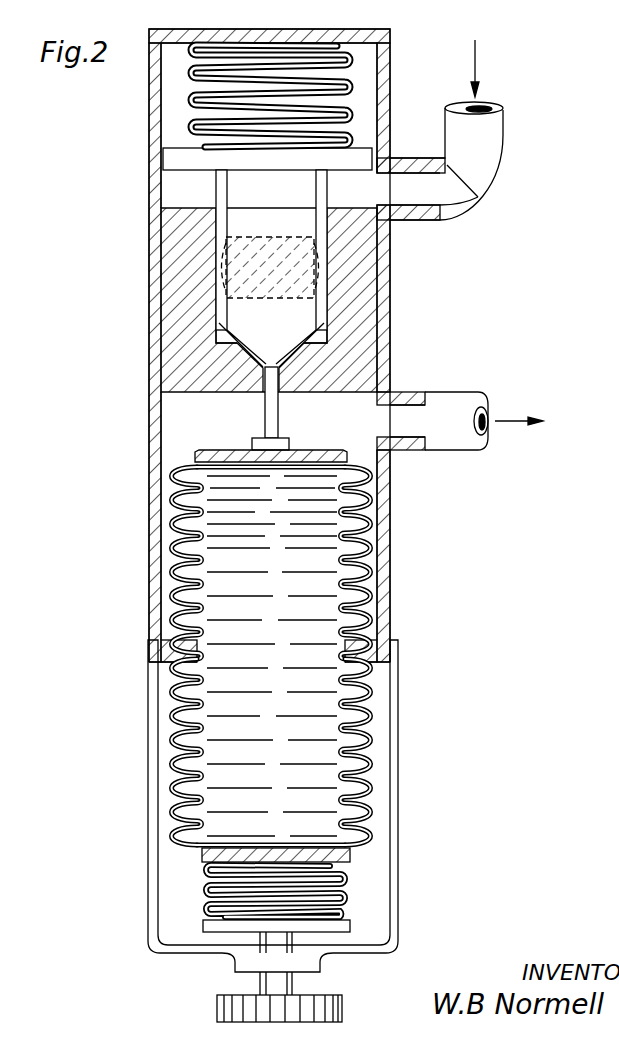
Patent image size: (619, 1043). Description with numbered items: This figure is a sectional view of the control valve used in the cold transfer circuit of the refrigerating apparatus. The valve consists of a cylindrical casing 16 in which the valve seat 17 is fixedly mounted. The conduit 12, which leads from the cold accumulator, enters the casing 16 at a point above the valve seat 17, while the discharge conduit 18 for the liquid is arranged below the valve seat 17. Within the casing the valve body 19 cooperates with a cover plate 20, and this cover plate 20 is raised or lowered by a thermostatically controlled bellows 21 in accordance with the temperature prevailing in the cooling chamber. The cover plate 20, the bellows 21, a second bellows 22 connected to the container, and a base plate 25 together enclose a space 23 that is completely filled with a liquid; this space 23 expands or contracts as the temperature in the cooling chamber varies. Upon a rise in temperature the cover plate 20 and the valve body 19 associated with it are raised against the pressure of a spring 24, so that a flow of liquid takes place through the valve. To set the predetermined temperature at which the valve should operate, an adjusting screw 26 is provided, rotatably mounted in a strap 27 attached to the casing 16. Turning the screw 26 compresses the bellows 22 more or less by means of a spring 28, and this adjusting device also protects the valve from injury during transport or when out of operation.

The conduit 12 is at (483, 173).
The cylindrical casing 16 is at (158, 311).
The valve seat 17 is at (357, 312).
The discharge conduit 18 is at (445, 400).
The valve body 19 is at (242, 203).
The cover plate 20 is at (202, 450).
The thermostatically controlled bellows 21 is at (171, 568).
The bellows 22 is at (173, 745).
The space 23 is at (328, 703).
The spring 24 is at (195, 75).
The base plate 25 is at (202, 852).
The adjusting screw 26 is at (223, 1004).
The strap 27 is at (152, 705).
The spring 28 is at (343, 895).